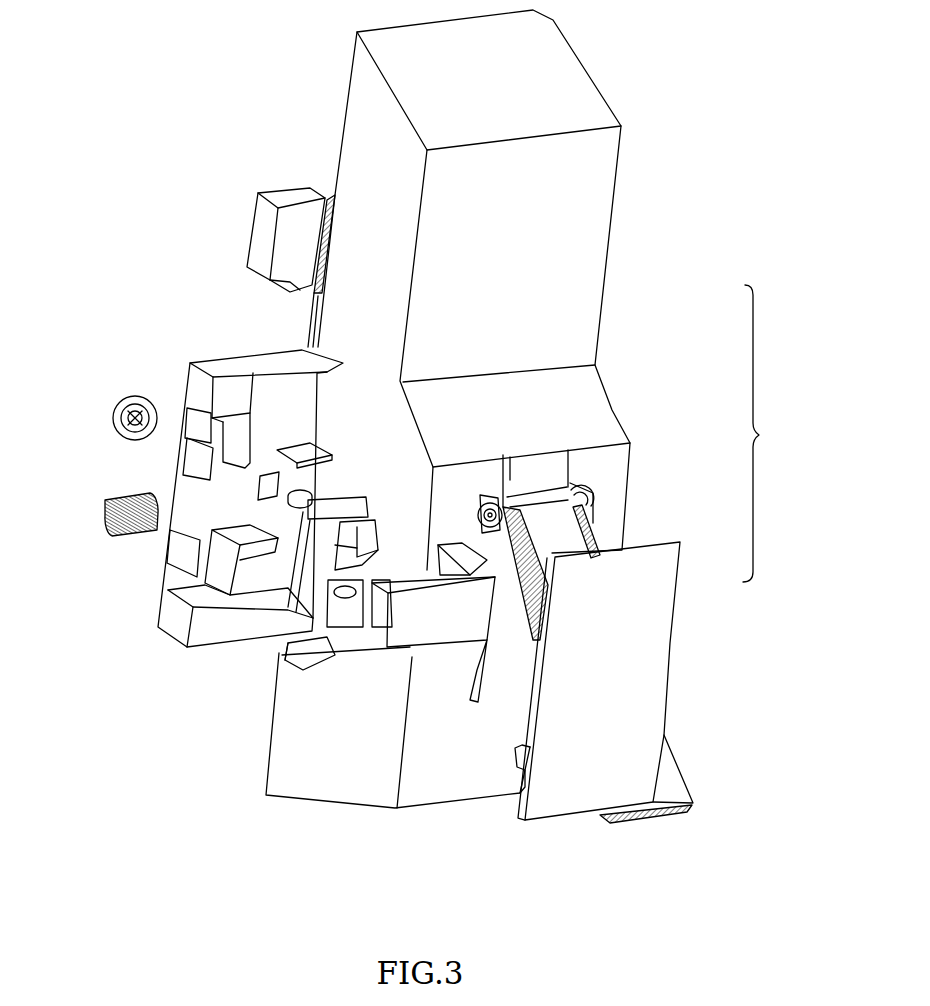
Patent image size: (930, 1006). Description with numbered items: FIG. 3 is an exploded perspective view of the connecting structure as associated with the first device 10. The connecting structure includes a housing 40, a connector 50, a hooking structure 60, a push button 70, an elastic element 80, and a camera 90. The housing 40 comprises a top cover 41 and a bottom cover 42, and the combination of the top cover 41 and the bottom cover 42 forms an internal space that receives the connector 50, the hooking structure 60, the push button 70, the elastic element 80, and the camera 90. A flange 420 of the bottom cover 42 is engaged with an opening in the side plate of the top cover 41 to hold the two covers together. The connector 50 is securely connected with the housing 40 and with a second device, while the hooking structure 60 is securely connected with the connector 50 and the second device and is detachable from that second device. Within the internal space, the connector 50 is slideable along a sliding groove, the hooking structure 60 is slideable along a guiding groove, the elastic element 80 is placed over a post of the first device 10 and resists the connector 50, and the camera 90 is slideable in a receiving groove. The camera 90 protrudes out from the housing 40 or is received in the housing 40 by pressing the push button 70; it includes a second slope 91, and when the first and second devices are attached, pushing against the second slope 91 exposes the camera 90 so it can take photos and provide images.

The first device 10 is at (570, 215).
The housing 40 is at (776, 433).
The top cover 41 is at (290, 400).
The bottom cover 42 is at (632, 613).
The flange 420 is at (518, 757).
The connector 50 is at (408, 640).
The hooking structure 60 is at (278, 655).
The push button 70 is at (113, 420).
The elastic element 80 is at (105, 510).
The camera 90 is at (290, 200).
The second slope 91 is at (318, 293).